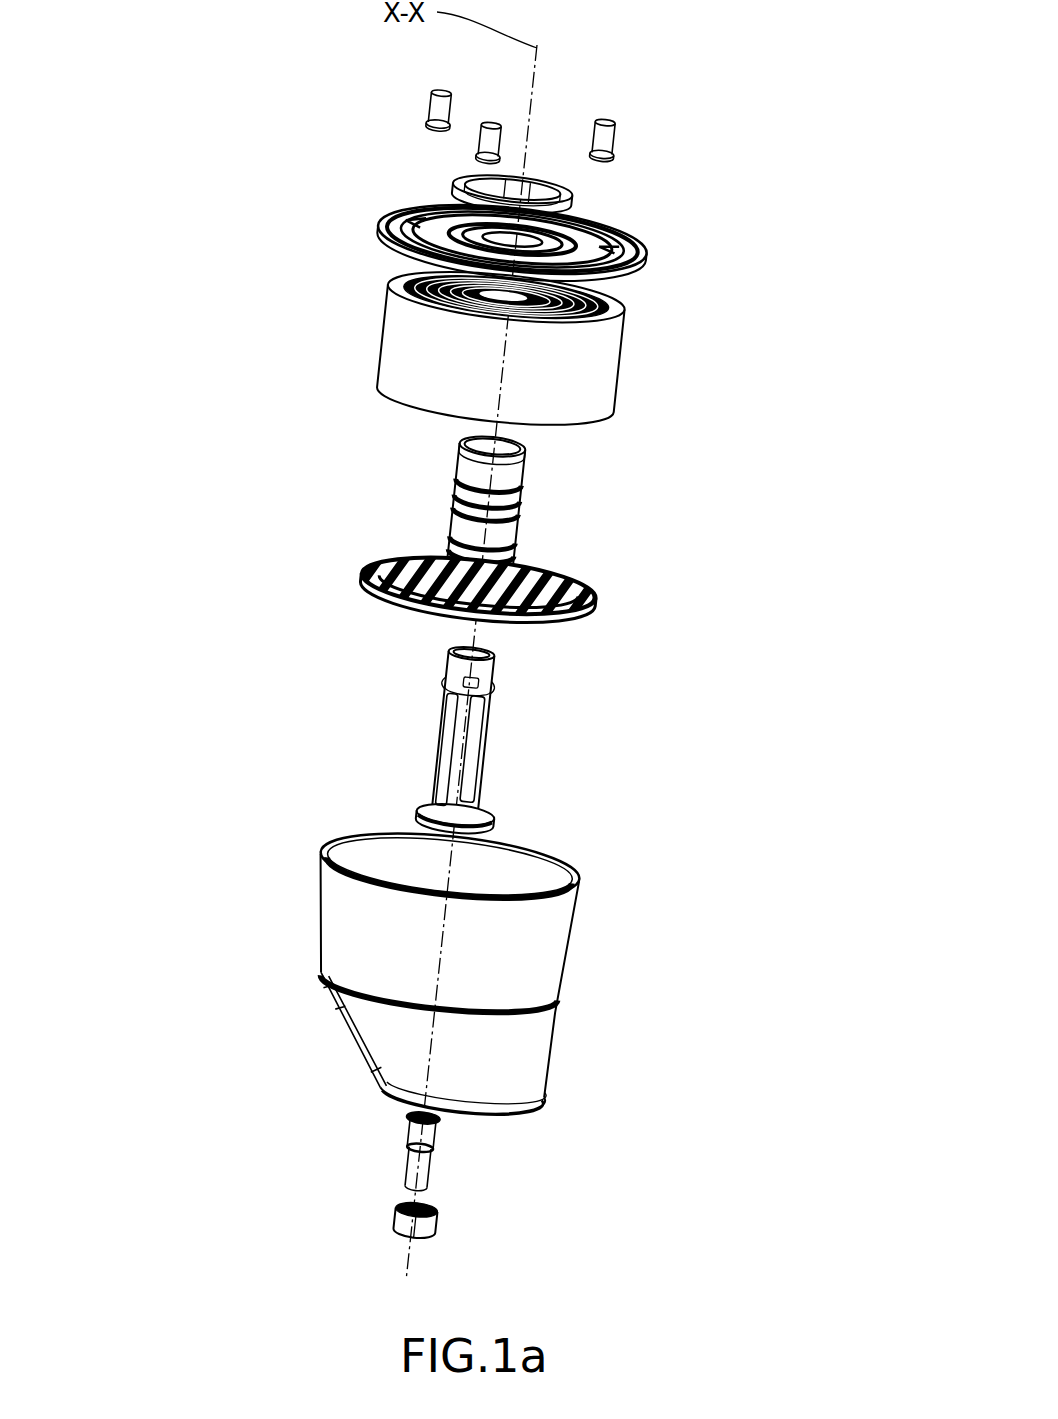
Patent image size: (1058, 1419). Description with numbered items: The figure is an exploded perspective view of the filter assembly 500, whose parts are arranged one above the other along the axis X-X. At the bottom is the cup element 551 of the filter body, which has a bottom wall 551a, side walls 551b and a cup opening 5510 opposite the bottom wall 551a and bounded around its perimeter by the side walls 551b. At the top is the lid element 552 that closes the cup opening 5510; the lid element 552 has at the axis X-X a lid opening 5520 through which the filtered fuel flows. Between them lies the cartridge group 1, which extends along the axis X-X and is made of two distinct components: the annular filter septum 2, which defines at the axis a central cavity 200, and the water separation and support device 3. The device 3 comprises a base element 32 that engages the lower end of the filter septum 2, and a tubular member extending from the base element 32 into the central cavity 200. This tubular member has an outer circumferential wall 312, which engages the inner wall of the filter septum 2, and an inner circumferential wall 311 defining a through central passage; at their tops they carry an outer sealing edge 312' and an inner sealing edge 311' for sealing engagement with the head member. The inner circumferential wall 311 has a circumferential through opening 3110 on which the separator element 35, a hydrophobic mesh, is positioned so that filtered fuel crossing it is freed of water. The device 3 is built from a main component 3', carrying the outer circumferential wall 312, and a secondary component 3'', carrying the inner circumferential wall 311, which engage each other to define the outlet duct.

The filter assembly 500 is at (205, 88).
The cartridge group 1 is at (333, 250).
The filter septum 2 is at (343, 362).
The water separation and support device 3 is at (485, 492).
The main component 3' is at (500, 567).
The secondary component 3'' is at (453, 741).
The lid opening 5520 is at (587, 222).
The lid element 552 is at (658, 255).
The central cavity 200 is at (575, 316).
The outer circumferential wall 312 is at (598, 523).
The outer sealing edge 312' is at (578, 463).
The base element 32 is at (613, 602).
The inner circumferential wall 311 is at (551, 742).
The inner sealing edge 311' is at (571, 684).
The through opening 3110 is at (359, 703).
The separator element 35 is at (477, 730).
The cup element 551 is at (593, 1012).
The cup opening 5510 is at (525, 878).
The side walls 551b is at (320, 918).
The bottom wall 551a is at (490, 1118).